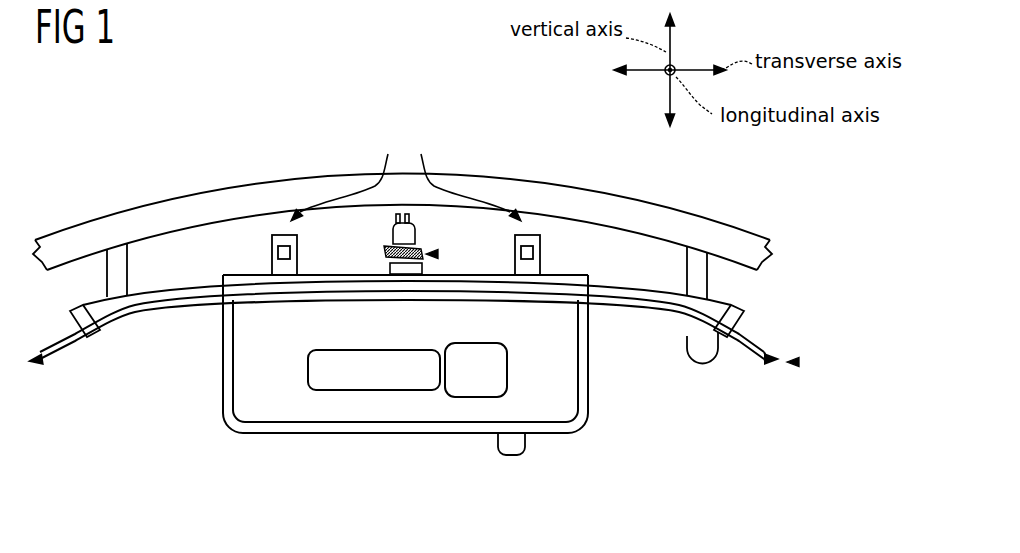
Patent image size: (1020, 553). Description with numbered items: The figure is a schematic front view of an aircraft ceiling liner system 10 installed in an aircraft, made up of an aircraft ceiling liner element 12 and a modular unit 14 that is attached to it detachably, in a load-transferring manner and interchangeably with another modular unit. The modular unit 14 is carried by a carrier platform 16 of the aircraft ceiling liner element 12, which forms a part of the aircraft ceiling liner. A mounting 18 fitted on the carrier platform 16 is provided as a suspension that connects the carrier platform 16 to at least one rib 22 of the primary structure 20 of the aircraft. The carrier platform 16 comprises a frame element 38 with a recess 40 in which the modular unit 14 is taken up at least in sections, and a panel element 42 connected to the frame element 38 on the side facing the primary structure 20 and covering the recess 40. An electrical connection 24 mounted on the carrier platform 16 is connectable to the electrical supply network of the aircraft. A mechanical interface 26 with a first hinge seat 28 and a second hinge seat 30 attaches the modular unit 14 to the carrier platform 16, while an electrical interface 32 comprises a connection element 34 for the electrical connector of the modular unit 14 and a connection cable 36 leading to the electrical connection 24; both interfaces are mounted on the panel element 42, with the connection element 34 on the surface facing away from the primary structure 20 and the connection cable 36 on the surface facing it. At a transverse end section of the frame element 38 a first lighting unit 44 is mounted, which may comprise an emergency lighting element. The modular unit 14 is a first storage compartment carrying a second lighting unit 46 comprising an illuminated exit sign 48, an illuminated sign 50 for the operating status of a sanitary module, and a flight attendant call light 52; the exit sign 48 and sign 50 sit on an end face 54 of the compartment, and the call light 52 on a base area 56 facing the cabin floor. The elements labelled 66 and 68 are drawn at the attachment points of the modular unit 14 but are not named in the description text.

The aircraft ceiling liner system 10 is at (403, 398).
The aircraft ceiling liner element 12 is at (403, 376).
The modular unit 14 is at (209, 421).
The carrier platform 16 is at (800, 362).
The mounting 18 is at (107, 281).
The primary structure 20 is at (404, 209).
The rib 22 is at (645, 214).
The electrical connection 24 is at (414, 237).
The mechanical interface 26 is at (406, 153).
The first hinge seat 28 is at (346, 173).
The second hinge seat 30 is at (465, 173).
The electrical interface 32 is at (440, 254).
The connection element 34 is at (388, 268).
The connection cable 36 is at (387, 246).
The frame element 38 is at (632, 328).
The recess 40 is at (434, 376).
The panel element 42 is at (572, 274).
The first lighting unit 44 is at (699, 364).
The second lighting unit 46 is at (416, 448).
The illuminated exit sign 48 is at (352, 376).
The illuminated sign for displaying an operating status of a sanitary module 50 is at (467, 381).
The flight attendant call light 52 is at (482, 472).
The end face 54 is at (272, 402).
The base area 56 is at (305, 438).
The first latching element 66 is at (272, 249).
The second latching element 68 is at (540, 246).